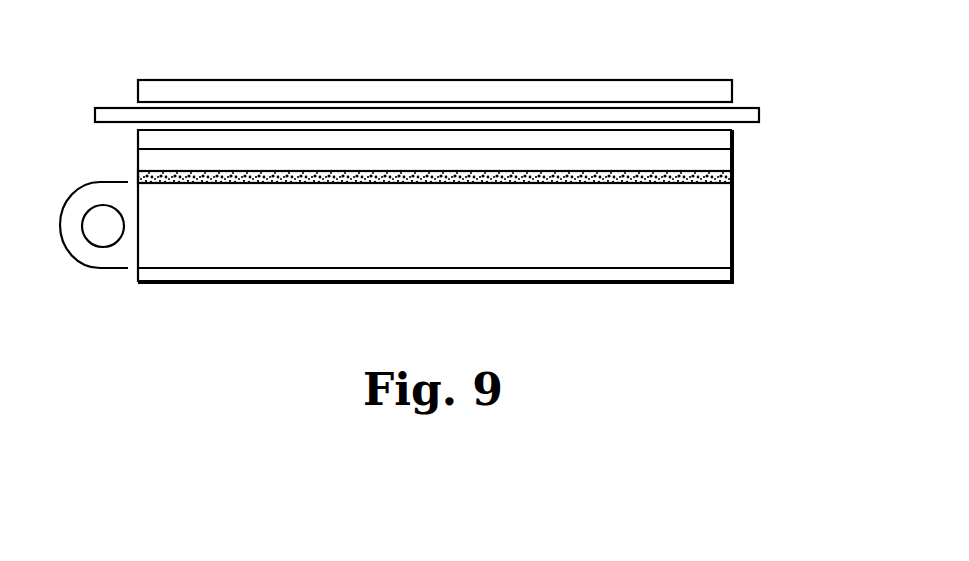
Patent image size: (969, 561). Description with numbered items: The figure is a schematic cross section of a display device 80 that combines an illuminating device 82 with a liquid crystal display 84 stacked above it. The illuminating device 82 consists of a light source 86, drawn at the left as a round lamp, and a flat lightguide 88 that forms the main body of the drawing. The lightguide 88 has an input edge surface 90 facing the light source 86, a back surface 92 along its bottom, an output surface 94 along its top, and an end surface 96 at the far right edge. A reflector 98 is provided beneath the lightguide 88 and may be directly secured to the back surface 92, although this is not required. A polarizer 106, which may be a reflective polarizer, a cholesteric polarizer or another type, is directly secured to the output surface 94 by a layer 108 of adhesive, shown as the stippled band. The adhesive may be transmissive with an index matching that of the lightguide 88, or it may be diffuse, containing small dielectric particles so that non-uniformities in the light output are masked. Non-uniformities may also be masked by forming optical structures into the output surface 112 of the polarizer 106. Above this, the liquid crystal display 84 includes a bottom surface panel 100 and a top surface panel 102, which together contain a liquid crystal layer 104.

The display device 80 is at (725, 43).
The illuminating device 82 is at (752, 203).
The liquid crystal display 84 is at (763, 95).
The light source 86 is at (72, 257).
The lightguide 88 is at (735, 245).
The input edge surface 90 is at (137, 253).
The back surface 92 is at (682, 270).
The output surface 94 is at (723, 181).
The end surface 96 is at (733, 230).
The reflector 98 is at (473, 275).
The bottom surface panel 100 is at (150, 138).
The top surface panel 102 is at (182, 90).
The liquid crystal layer 104 is at (107, 112).
The polarizer 106 is at (150, 160).
The layer of adhesive 108 is at (275, 171).
The output surface of the reflective polarizer 112 is at (631, 149).